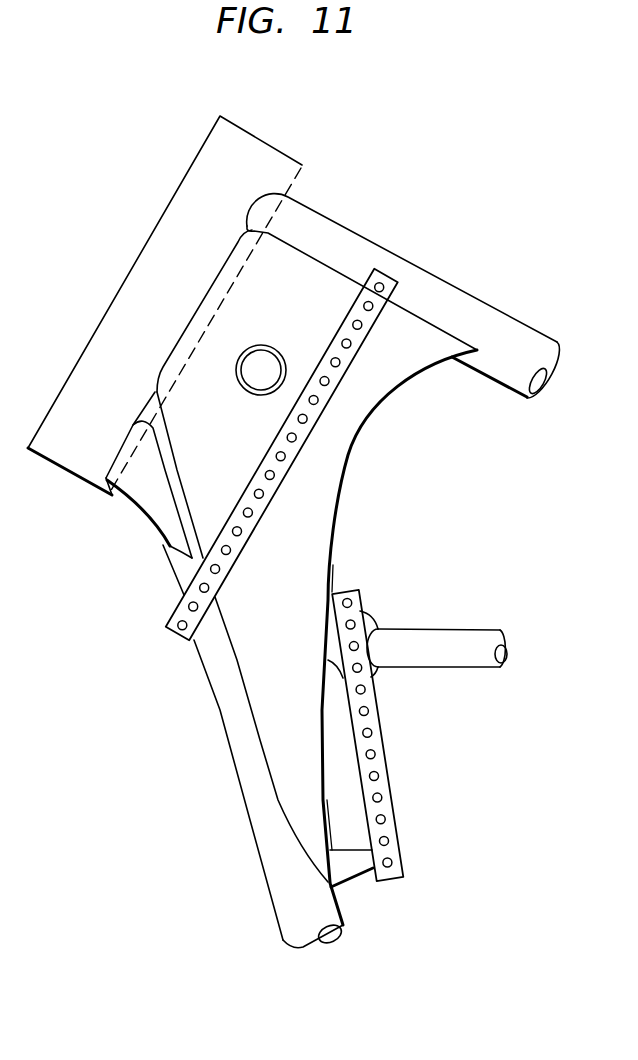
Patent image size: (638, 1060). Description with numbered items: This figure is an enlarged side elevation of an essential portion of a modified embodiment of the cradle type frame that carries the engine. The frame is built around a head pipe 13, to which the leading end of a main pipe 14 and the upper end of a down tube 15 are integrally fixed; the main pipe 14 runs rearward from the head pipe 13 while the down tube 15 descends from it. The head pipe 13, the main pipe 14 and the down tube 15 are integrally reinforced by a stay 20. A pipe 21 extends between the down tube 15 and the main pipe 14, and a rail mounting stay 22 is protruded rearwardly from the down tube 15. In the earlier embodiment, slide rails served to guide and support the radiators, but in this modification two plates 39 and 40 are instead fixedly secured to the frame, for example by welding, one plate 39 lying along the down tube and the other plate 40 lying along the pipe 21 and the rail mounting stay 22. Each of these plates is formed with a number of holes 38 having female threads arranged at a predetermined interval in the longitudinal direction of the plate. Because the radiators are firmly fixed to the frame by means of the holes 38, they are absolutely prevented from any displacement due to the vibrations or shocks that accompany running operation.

The head pipe 13 is at (153, 262).
The main pipe 14 is at (515, 327).
The down tube 15 is at (232, 713).
The stay 20 is at (380, 380).
The pipe 21 is at (475, 637).
The rail mounting stay 22 is at (350, 862).
The holes 38 is at (259, 493).
The plate 39 is at (296, 448).
The plate 40 is at (385, 803).